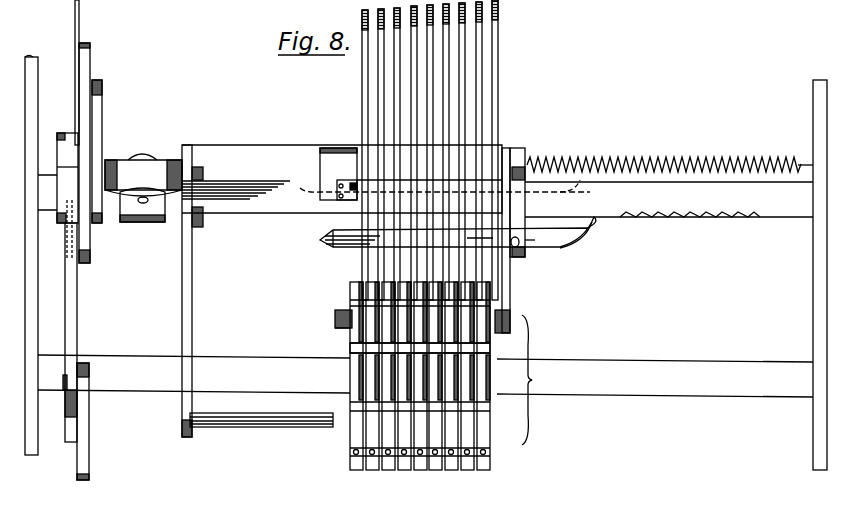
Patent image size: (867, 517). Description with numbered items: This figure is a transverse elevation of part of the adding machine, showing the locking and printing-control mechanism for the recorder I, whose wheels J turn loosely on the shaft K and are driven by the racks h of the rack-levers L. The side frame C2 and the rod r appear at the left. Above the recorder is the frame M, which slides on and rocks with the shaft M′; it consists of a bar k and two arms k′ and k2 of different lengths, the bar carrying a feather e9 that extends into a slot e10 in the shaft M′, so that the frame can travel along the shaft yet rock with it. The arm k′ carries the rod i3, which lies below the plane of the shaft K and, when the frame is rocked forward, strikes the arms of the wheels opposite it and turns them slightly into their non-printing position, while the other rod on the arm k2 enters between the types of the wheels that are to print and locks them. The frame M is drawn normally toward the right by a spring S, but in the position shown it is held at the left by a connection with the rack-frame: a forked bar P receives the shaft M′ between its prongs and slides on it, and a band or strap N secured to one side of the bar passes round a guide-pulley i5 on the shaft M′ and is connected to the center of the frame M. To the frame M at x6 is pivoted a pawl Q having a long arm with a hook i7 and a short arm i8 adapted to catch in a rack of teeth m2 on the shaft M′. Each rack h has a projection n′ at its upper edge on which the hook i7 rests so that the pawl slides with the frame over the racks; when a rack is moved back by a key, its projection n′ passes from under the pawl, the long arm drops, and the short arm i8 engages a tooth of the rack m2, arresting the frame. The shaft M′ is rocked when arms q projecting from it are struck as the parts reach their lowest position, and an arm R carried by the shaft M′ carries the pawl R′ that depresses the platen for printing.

The side frame C2 is at (37, 326).
The rod r is at (67, 250).
The arm R is at (78, 298).
The pawl R′ is at (89, 428).
The arm q is at (90, 66).
The forked bar P is at (102, 110).
The guide-pulley i5 is at (140, 162).
The band or strap N is at (100, 140).
The arm k′ is at (191, 304).
The frame M is at (258, 146).
The bar k is at (320, 150).
The feather e9 is at (322, 188).
The slot e10 is at (388, 190).
The rack-lever L is at (490, 47).
The projection n′ is at (502, 262).
The arm k2 is at (512, 298).
The spring S is at (634, 157).
The shaft M′ is at (669, 199).
The rack or series of teeth m2 is at (681, 220).
The shaft K is at (629, 362).
The rod i3 is at (302, 416).
The pawl Q is at (330, 250).
The projection or hook i7 is at (355, 250).
The short arm i8 is at (594, 226).
The pivot x6 is at (533, 241).
The recorder wheel J is at (350, 330).
The recorder I is at (447, 376).
The rack h is at (492, 348).